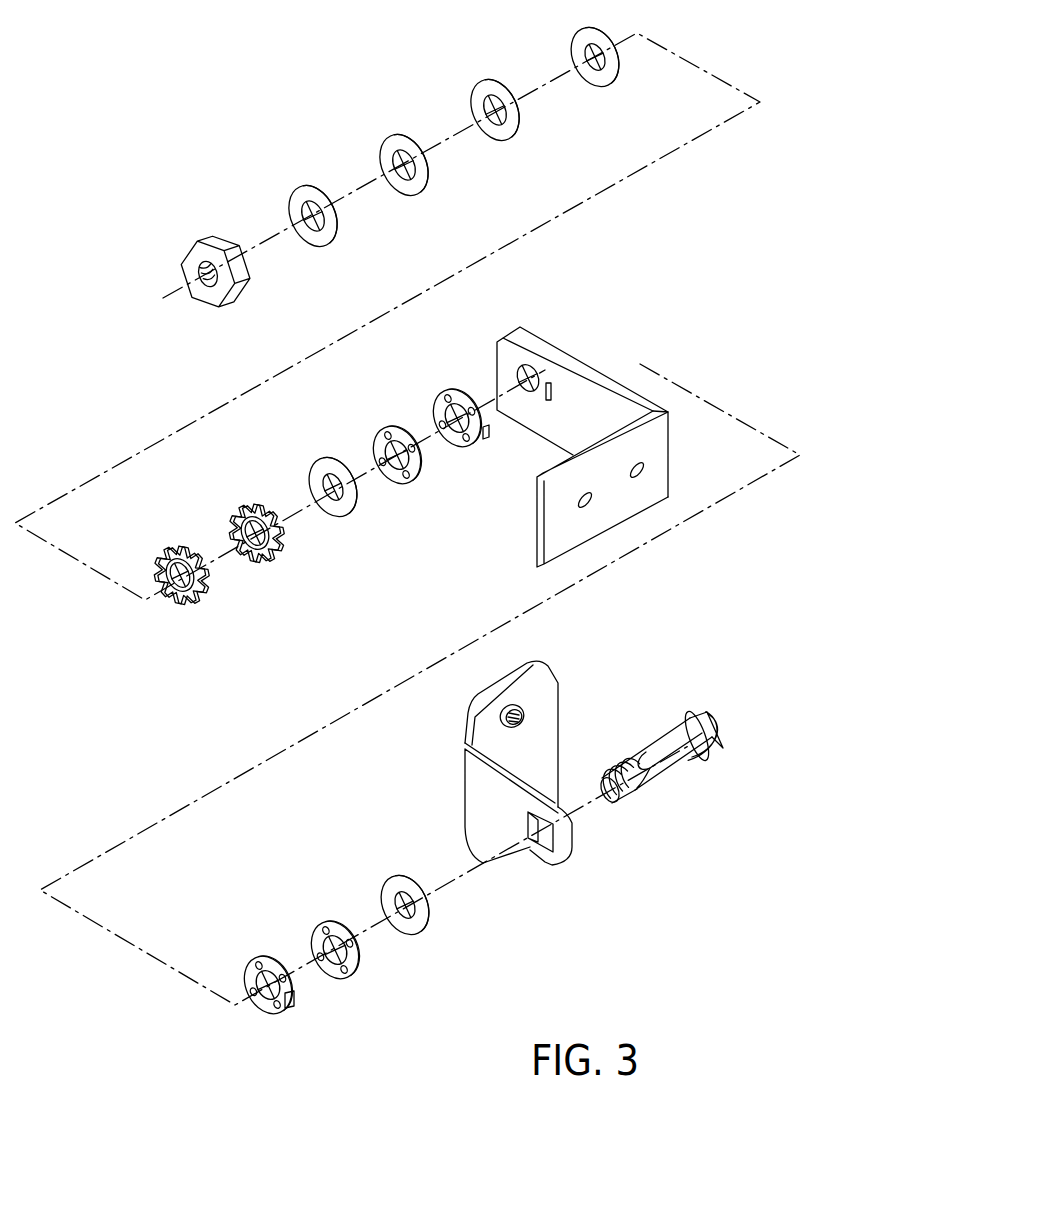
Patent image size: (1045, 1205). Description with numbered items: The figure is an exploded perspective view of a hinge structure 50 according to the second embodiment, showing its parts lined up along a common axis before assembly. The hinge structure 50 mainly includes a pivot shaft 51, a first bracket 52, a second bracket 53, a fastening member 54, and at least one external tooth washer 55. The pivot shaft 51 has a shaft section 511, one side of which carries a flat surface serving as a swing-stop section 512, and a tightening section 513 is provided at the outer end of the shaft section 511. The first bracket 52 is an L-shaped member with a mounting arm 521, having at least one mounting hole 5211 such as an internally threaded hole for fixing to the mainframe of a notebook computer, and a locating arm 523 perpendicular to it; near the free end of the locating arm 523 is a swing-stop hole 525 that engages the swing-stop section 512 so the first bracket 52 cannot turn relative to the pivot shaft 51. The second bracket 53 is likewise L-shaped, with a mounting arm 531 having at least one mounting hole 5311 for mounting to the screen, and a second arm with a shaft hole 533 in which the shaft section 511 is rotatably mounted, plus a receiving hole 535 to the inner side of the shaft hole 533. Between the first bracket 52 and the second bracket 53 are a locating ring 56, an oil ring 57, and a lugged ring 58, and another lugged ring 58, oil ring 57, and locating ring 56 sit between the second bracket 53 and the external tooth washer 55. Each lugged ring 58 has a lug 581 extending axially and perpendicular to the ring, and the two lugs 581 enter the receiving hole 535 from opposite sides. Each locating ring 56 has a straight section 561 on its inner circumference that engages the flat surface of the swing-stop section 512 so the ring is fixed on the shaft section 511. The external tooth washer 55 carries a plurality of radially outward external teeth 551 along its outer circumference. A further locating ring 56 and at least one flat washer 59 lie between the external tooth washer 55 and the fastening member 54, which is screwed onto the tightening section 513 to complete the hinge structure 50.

The hinge structure 50 is at (200, 110).
The pivot shaft 51 is at (689, 734).
The shaft section 511 is at (677, 763).
The swing-stop section 512 is at (668, 750).
The tightening section 513 is at (640, 797).
The first bracket 52 is at (519, 776).
The mounting arm 521 is at (550, 712).
The mounting hole 5211 is at (522, 723).
The locating arm 523 is at (468, 837).
The swing-stop hole 525 is at (540, 845).
The second bracket 53 is at (593, 419).
The mounting arm 531 is at (644, 508).
The mounting hole 5311 is at (647, 468).
The shaft hole 533 is at (517, 373).
The receiving hole 535 is at (553, 393).
The fastening member 54 is at (208, 245).
The external tooth washer 55 is at (213, 574).
The external teeth 551 is at (172, 550).
The locating ring 56 is at (454, 500).
The straight section 561 is at (583, 53).
The oil ring 57 is at (407, 478).
The lugged ring 58 is at (369, 707).
The lug 581 is at (488, 437).
The flat washer 59 is at (318, 240).